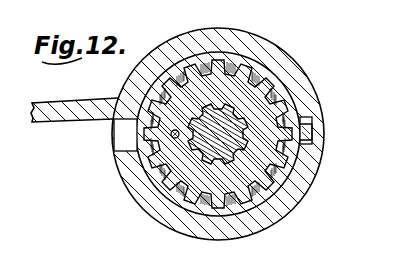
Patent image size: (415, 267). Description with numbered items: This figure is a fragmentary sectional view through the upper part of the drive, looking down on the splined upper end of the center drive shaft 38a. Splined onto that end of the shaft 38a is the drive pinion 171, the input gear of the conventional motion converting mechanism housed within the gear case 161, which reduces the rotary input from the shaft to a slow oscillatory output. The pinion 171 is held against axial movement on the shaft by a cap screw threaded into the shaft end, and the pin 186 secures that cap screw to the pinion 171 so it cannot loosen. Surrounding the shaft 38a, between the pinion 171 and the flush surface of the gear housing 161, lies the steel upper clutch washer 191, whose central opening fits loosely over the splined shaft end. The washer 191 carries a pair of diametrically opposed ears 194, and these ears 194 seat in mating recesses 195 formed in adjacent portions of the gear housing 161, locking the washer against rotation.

The gear case 161 is at (282, 222).
The upper clutch washer 191 is at (262, 73).
The drive pinion 171 is at (178, 200).
The center drive shaft 38a is at (245, 150).
The pin 186 is at (171, 137).
The mating recesses 195 is at (308, 128).
The ears 194 is at (310, 131).